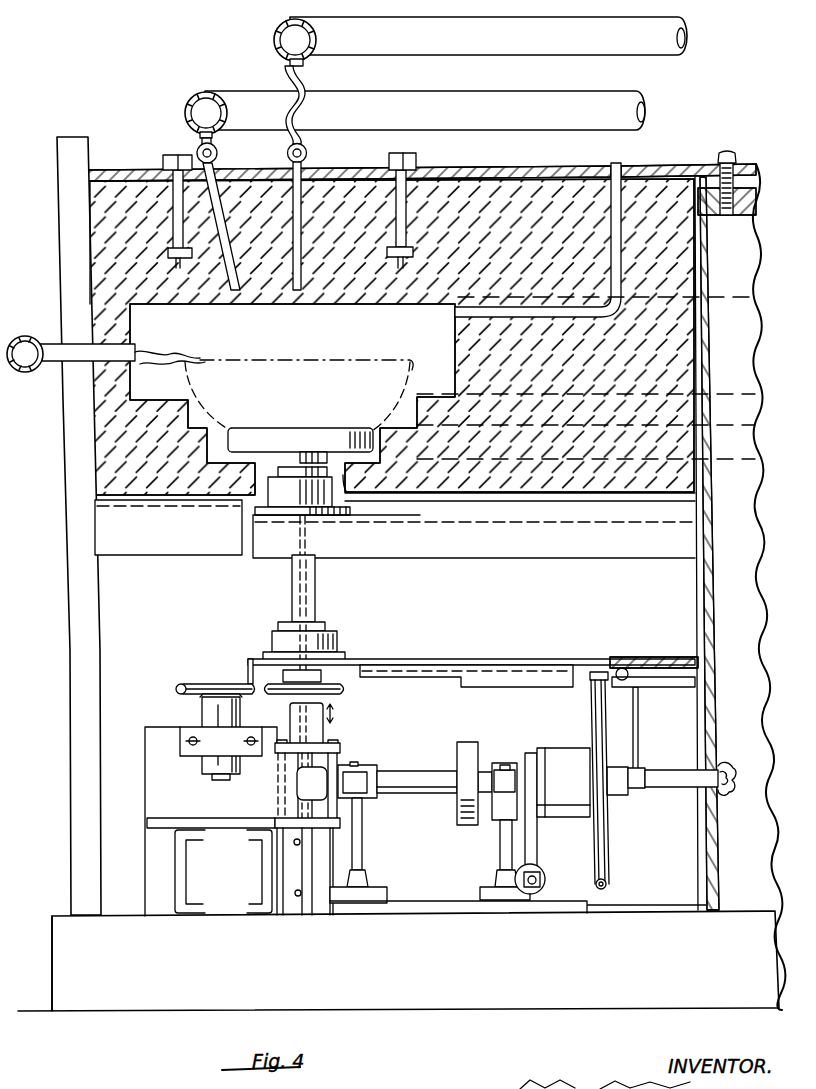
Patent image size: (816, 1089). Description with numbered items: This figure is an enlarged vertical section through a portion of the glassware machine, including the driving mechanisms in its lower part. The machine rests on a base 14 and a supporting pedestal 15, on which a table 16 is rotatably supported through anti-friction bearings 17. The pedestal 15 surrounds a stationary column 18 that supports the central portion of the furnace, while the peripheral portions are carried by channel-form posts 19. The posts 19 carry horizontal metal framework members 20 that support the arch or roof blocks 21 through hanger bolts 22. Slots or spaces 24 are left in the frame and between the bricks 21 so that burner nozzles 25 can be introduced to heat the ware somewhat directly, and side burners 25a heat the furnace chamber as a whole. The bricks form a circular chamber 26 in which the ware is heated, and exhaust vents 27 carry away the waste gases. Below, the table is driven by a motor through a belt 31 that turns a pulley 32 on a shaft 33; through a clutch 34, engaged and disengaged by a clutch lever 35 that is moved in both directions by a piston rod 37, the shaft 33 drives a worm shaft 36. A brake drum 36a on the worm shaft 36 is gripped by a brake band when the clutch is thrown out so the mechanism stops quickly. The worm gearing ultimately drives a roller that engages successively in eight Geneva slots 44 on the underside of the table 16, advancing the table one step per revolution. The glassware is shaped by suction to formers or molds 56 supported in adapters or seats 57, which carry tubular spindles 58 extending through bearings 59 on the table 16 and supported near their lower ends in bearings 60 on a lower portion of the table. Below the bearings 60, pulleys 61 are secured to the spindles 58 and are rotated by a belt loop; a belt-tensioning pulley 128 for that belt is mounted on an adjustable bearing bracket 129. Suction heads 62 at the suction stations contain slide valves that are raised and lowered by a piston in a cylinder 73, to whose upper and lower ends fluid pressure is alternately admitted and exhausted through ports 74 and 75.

The base 14 is at (78, 938).
The supporting pedestal 15 is at (697, 580).
The table 16 is at (458, 655).
The anti-friction bearings 17 is at (628, 668).
The stationary column 18 is at (745, 242).
The posts 19 is at (76, 768).
The horizontal metal framework members 20 is at (118, 161).
The arch or roof blocks 21 is at (338, 190).
The hanger bolts 22 is at (180, 166).
The slots or spaces 24 is at (100, 272).
The burner nozzles 25 is at (296, 197).
The side burners 25a is at (50, 348).
The circular chamber 26 is at (140, 385).
The exhaust vents 27 is at (624, 168).
The belt 31 is at (601, 672).
The pulley 32 is at (608, 880).
The shaft 33 is at (686, 783).
The clutch 34 is at (553, 748).
The clutch lever 35 is at (538, 833).
The worm shaft 36 is at (430, 786).
The brake drum 36a is at (460, 750).
The piston rod 37 is at (544, 873).
The Geneva slots 44 is at (522, 676).
The formers or molds 56 is at (383, 428).
The adapters or seats 57 is at (245, 437).
The tubular spindles 58 is at (318, 582).
The bearings 59 is at (275, 505).
The bearings 60 is at (340, 635).
The pulleys 61 is at (335, 682).
The suction heads 62 is at (327, 730).
The cylinder 73 is at (295, 870).
The port 74 is at (294, 847).
The port 75 is at (300, 896).
The belt-tensioning pulley 128 is at (221, 683).
The adjustable bearing bracket 129 is at (207, 715).